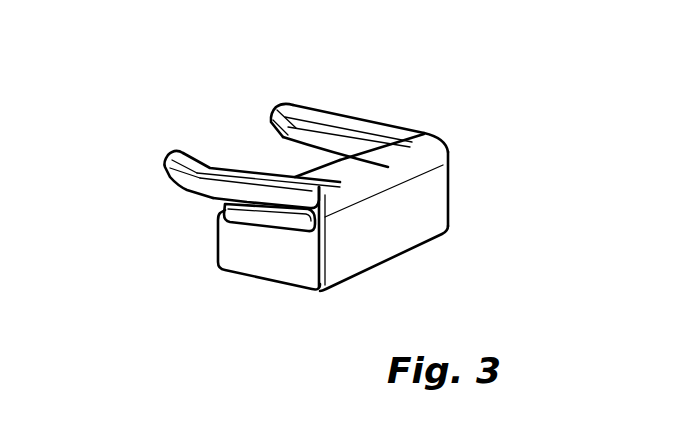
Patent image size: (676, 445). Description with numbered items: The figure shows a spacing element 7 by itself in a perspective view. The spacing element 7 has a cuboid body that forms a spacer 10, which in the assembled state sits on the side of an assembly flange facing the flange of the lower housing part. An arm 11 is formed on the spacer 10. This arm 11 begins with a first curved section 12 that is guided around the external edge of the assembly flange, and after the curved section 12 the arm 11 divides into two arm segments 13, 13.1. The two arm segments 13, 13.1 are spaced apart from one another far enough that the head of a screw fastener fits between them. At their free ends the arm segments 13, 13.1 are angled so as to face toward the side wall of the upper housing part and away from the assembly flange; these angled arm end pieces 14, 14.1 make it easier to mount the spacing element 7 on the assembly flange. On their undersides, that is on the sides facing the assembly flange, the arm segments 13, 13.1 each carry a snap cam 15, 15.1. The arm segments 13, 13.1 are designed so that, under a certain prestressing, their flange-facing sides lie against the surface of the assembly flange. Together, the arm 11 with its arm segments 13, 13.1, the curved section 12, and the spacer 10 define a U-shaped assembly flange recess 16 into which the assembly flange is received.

The spacing element 7 is at (467, 130).
The spacer 10 is at (248, 246).
The arm 11 is at (420, 128).
The first curved section 12 is at (450, 148).
The arm segment 13 is at (183, 147).
The arm segment 13.1 is at (300, 92).
The angled arm end piece 14 is at (178, 172).
The angled arm end piece 14.1 is at (308, 112).
The snap cam 15 is at (228, 202).
The snap cam 15.1 is at (335, 158).
The U-shaped assembly flange recess 16 is at (255, 210).